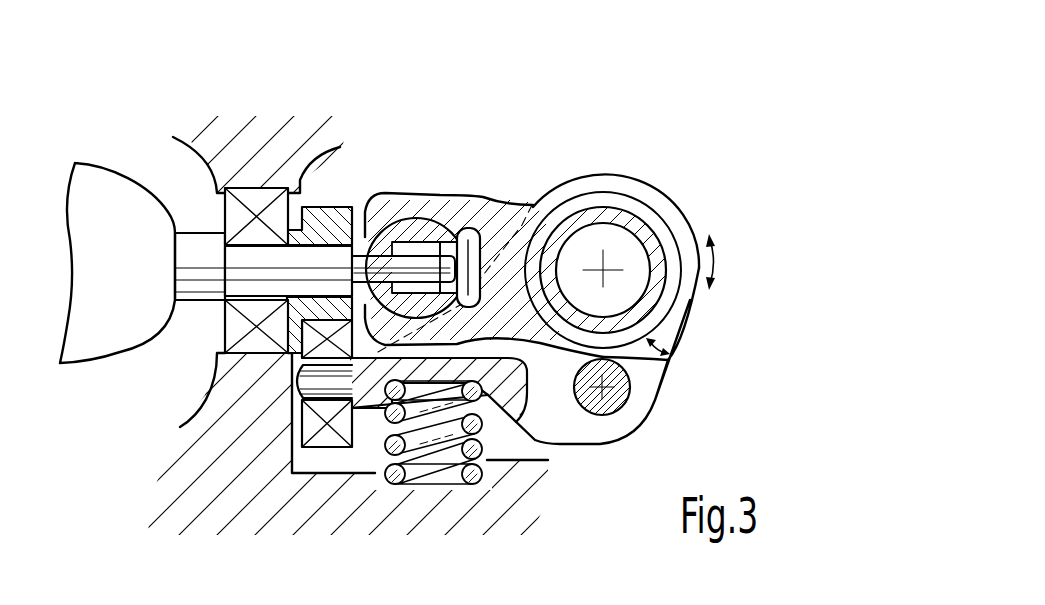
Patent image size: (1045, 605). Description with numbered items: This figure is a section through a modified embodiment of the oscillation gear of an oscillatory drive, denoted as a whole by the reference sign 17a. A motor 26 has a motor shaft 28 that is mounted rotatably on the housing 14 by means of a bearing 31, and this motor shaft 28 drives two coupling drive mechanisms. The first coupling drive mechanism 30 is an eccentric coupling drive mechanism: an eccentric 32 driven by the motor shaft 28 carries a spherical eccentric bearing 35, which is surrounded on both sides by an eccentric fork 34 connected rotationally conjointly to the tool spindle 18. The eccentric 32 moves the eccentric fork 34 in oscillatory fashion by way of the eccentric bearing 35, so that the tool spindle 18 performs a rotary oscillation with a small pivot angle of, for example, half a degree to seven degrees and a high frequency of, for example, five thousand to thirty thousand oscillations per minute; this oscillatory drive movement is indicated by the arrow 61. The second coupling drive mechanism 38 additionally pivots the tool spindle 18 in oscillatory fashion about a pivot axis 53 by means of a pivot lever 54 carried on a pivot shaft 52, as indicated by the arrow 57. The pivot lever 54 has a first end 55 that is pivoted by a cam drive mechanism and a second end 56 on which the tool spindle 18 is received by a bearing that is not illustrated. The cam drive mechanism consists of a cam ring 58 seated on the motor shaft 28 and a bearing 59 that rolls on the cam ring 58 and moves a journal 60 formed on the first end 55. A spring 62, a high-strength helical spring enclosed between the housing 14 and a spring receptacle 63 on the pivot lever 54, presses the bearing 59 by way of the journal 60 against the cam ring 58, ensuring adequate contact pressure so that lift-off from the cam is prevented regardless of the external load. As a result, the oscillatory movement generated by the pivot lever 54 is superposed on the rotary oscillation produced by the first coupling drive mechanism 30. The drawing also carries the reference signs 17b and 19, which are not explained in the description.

The housing 14 is at (300, 143).
The oscillation gear 17a is at (660, 98).
The direction of movement 17b is at (683, 604).
The tool spindle 18 is at (640, 178).
The pivot axis 19 is at (605, 268).
The motor 26 is at (100, 202).
The motor shaft 28 is at (195, 283).
The first coupling drive mechanism 30 is at (494, 177).
The bearing 31 is at (262, 210).
The eccentric 32 is at (380, 258).
The eccentric fork 34 is at (457, 198).
The eccentric bearing 35 is at (415, 240).
The second coupling drive mechanism 38 is at (690, 356).
The pivot shaft 52 is at (622, 398).
The pivot axis 53 is at (588, 410).
The pivot lever 54 is at (690, 312).
The first end 55 is at (385, 410).
The second end 56 is at (686, 237).
The arrow 57 is at (670, 345).
The cam ring 58 is at (318, 222).
The bearing 59 is at (310, 385).
The journal 60 is at (320, 437).
The arrow 61 is at (716, 262).
The spring 62 is at (490, 460).
The spring receptacle 63 is at (510, 410).